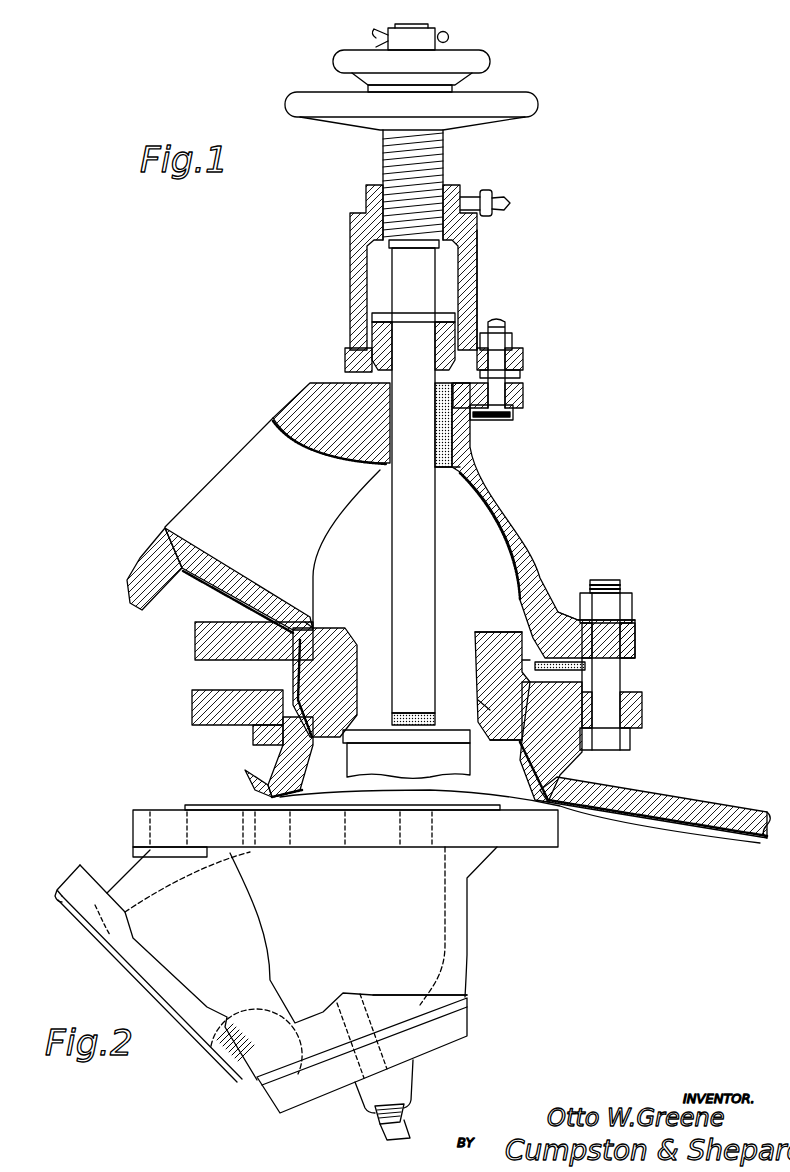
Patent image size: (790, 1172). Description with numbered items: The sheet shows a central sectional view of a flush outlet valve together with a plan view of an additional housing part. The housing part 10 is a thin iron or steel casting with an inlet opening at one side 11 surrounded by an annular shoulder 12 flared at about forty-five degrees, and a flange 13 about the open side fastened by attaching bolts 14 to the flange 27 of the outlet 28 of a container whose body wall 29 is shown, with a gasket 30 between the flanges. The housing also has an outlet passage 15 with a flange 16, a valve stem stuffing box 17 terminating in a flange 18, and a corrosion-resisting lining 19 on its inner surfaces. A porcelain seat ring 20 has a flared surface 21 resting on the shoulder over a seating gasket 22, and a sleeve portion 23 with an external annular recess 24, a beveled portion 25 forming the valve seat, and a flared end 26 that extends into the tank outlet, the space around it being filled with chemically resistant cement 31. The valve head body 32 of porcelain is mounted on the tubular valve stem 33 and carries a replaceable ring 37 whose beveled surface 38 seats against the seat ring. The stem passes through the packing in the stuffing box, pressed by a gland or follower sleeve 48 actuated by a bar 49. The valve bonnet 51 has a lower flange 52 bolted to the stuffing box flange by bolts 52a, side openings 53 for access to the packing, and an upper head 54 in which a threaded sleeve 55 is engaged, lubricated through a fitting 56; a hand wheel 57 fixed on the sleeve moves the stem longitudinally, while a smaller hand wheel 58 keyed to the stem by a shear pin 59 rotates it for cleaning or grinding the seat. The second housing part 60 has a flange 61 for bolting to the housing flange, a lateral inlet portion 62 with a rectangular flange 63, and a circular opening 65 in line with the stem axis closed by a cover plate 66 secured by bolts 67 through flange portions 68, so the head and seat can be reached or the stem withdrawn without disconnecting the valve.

In FIG. 1, the housing part 10 is at (500, 500).
In FIG. 1, the inlet opening side 11 is at (255, 668).
In FIG. 1, the annular shoulder 12 is at (313, 626).
In FIG. 1, the flange 13 is at (636, 637).
In FIG. 1, the attaching bolts 14 is at (622, 665).
In FIG. 1, the outlet passage 15 is at (258, 450).
In FIG. 1, the outlet flange 16 is at (130, 602).
In FIG. 1, the valve stem stuffing box 17 is at (490, 422).
In FIG. 1, the stuffing box flange 18 is at (525, 398).
In FIG. 1, the corrosion-resisting lining 19 is at (340, 465).
In FIG. 1, the seat ring 20 is at (482, 633).
In FIG. 1, the flared surface 21 is at (541, 618).
In FIG. 1, the seating gasket 22 is at (340, 629).
In FIG. 1, the sleeve portion 23 is at (500, 742).
In FIG. 1, the external annular recess 24 is at (522, 664).
In FIG. 1, the beveled seat portion 25 is at (478, 708).
In FIG. 1, the flared end 26 is at (436, 723).
In FIG. 1, the container outlet flange 27 is at (645, 702).
In FIG. 1, the container outlet 28 is at (565, 752).
In FIG. 1, the container body wall 29 is at (690, 800).
In FIG. 1, the gasket 30 is at (586, 670).
In FIG. 1, the chemically resistant cement 31 is at (517, 748).
In FIG. 1, the valve head body 32 is at (408, 760).
In FIG. 1, the valve stem 33 is at (392, 524).
In FIG. 1, the seating ring 37 is at (318, 742).
In FIG. 1, the beveled seating surface 38 is at (406, 748).
In FIG. 1, the gland or follower sleeve 48 is at (345, 358).
In FIG. 1, the gland bar 49 is at (372, 318).
In FIG. 1, the valve bonnet 51 is at (478, 303).
In FIG. 1, the bonnet flange 52 is at (525, 356).
In FIG. 1, the bonnet bolts 52a is at (522, 375).
In FIG. 1, the side openings 53 is at (450, 278).
In FIG. 1, the bonnet head 54 is at (480, 231).
In FIG. 1, the threaded sleeve 55 is at (447, 166).
In FIG. 1, the lubricating fitting 56 is at (503, 199).
In FIG. 1, the hand wheel 57 is at (540, 106).
In FIG. 1, the smaller hand wheel 58 is at (492, 63).
In FIG. 1, the shear pin 59 is at (449, 36).
In FIG. 2, the second housing part 60 is at (468, 926).
In FIG. 2, the flange 61 is at (560, 840).
In FIG. 2, the lateral inlet portion 62 is at (132, 872).
In FIG. 2, the inlet flange 63 is at (75, 882).
In FIG. 2, the circular opening 65 is at (467, 1000).
In FIG. 2, the cover plate 66 is at (470, 1022).
In FIG. 2, the cover bolts 67 is at (405, 1090).
In FIG. 2, the flange portions 68 is at (393, 994).